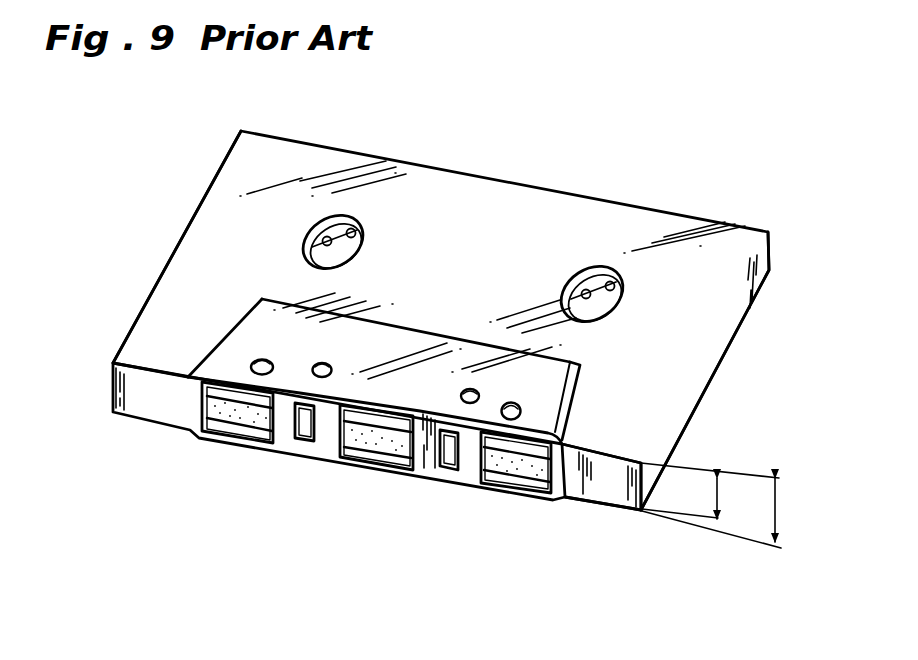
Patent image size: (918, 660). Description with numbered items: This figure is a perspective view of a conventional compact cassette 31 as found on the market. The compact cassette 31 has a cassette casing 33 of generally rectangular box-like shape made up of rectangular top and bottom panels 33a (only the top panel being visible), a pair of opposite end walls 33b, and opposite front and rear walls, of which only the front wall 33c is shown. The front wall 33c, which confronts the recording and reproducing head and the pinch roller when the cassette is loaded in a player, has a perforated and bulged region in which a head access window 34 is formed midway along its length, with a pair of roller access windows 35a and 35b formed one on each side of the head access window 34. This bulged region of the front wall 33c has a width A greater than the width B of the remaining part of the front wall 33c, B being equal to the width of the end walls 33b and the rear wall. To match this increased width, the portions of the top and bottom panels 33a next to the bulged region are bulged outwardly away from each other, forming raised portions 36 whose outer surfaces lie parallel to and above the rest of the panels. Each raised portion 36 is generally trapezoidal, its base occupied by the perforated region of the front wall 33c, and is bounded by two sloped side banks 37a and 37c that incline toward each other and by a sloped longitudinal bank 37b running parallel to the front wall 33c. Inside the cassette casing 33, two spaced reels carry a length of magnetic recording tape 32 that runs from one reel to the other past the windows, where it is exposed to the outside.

The compact cassette 31 is at (626, 179).
The magnetic recording tape 32 is at (404, 441).
The cassette casing 33 is at (431, 162).
The top and bottom panels 33a is at (495, 260).
The end walls 33b is at (697, 400).
The front wall 33c is at (607, 488).
The head access window 34 is at (363, 453).
The roller access window 35a is at (531, 485).
The roller access window 35b is at (240, 427).
The raised portions 36 is at (355, 375).
The sloped side bank 37a is at (572, 389).
The sloped longitudinal bank 37b is at (425, 330).
The sloped side bank 37c is at (236, 325).